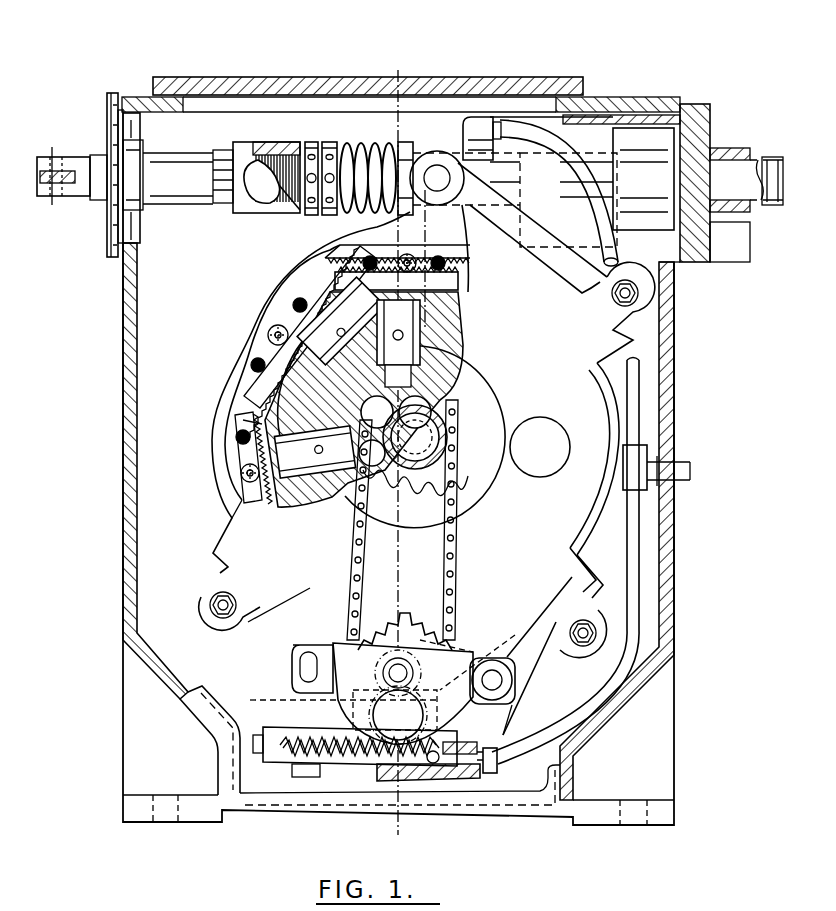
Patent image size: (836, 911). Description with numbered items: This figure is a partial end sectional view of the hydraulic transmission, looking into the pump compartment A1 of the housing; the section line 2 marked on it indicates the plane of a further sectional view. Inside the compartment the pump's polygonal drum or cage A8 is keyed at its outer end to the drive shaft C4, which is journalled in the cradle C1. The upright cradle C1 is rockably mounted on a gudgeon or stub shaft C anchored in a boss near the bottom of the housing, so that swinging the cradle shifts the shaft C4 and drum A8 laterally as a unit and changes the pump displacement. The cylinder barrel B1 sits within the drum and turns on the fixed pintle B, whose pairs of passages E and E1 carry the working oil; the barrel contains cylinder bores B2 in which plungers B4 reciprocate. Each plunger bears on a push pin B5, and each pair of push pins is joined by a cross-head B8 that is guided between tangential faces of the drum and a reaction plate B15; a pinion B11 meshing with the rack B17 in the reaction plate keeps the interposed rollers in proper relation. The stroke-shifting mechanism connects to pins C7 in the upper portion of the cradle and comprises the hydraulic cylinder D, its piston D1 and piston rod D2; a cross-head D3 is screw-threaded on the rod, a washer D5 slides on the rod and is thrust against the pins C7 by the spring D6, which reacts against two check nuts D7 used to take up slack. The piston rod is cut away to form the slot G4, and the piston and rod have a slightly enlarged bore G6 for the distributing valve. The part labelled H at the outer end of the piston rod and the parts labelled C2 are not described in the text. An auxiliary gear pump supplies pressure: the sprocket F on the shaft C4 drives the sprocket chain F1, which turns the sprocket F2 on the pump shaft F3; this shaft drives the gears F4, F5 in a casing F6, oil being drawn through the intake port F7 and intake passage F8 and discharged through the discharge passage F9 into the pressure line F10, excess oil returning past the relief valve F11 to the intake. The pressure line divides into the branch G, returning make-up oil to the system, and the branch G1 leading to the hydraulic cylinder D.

The pump compartment A1 is at (676, 563).
The polygonal drum or cage A8 is at (243, 315).
The hand knob H is at (40, 177).
The hydraulic cylinder D is at (596, 130).
The piston D1 is at (648, 145).
The piston rod D2 is at (187, 168).
The cross-head D3 is at (263, 148).
The washer D5 is at (406, 143).
The spring D6 is at (368, 143).
The check nuts D7 is at (330, 150).
The gudgeon or stub shaft C is at (556, 449).
The cradle C1 is at (255, 612).
The pivot pins C2 is at (480, 125).
The drive shaft C4 is at (425, 443).
The pins C7 is at (440, 175).
The branch of pressure line G is at (683, 460).
The pipe G1 is at (640, 380).
The slot G4 is at (498, 150).
The enlarged bore G6 is at (720, 172).
The pintle B is at (450, 440).
The cylinder barrel B1 is at (445, 330).
The cylinder bores B2 is at (410, 380).
The plunger B4 is at (412, 307).
The push pin B5 is at (443, 273).
The cross-head B8 is at (208, 345).
The pinion B11 is at (272, 322).
The reaction plate B15 is at (352, 262).
The rack B17 is at (300, 335).
The passages E is at (396, 412).
The passages E1 is at (372, 453).
The sprocket F is at (388, 530).
The sprocket chain F1 is at (458, 550).
The sprocket F2 is at (420, 623).
The pump shaft F3 is at (363, 663).
The pump gear F4 is at (451, 680).
The pump gear F5 is at (473, 727).
The casing F6 is at (453, 663).
The intake port F7 is at (302, 777).
The intake passage F8 is at (322, 700).
The discharge passage F9 is at (497, 748).
The pressure line F10 is at (528, 748).
The relief valve F11 is at (435, 763).
The section line 2 is at (449, 64).